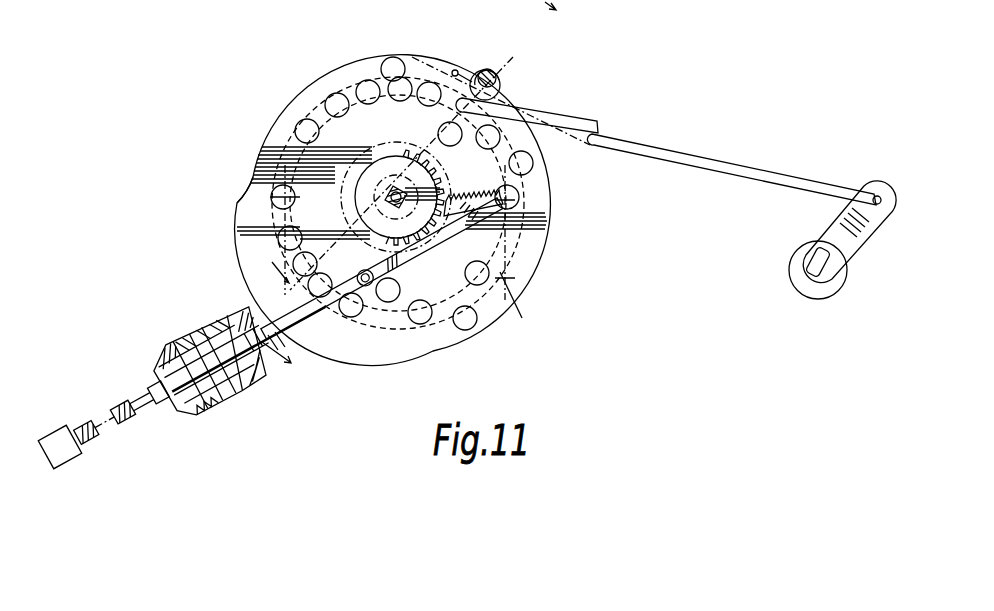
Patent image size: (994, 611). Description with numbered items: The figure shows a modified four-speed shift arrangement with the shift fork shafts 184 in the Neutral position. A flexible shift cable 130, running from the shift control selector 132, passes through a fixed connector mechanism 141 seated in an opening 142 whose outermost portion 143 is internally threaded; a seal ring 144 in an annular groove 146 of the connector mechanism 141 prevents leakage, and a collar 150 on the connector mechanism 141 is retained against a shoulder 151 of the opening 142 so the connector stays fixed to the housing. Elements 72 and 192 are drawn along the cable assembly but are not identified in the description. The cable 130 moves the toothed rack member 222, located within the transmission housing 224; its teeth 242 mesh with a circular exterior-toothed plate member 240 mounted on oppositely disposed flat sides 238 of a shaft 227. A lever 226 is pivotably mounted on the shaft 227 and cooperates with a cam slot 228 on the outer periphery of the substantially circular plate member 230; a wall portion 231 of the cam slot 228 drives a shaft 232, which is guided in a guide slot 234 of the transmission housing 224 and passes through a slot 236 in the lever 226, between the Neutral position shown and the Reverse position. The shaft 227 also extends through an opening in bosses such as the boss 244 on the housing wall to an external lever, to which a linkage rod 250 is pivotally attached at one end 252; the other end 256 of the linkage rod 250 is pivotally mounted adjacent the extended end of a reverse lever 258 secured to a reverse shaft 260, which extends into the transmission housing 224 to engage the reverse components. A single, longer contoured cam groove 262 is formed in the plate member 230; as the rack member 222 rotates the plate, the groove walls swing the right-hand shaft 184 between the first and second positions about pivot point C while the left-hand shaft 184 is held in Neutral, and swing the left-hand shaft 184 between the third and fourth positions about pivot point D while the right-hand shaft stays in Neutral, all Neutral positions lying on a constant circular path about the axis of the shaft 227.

The drive shaft 72 is at (281, 359).
The flexible shift cable 130 is at (86, 433).
The shift control selector 132 is at (60, 447).
The fixed connector mechanism 141 is at (214, 362).
The opening 142 is at (253, 340).
The internally threaded outermost portion 143 is at (205, 405).
The seal ring 144 is at (244, 348).
The annular groove 146 is at (219, 326).
The collar 150 is at (192, 340).
The shoulder 151 is at (168, 355).
The shift fork shafts 184 is at (252, 186).
The collar 192 is at (122, 412).
The toothed rack member 222 is at (298, 315).
The transmission housing 224 is at (840, 288).
The lever 226 is at (420, 162).
The shaft 227 is at (394, 186).
The cam slot 228 is at (510, 105).
The circular plate member 230 is at (552, 177).
The wall portion 231 is at (500, 85).
The shaft 232 is at (498, 76).
The guide slot 234 is at (455, 70).
The slot 236 is at (487, 68).
The flat sides 238 is at (452, 188).
The circular exterior-toothed plate member 240 is at (380, 174).
The teeth 242 is at (292, 255).
The boss 244 is at (378, 270).
The linkage rod 250 is at (632, 143).
The end of linkage rod 252 is at (437, 62).
The other end of linkage rod 256 is at (877, 195).
The reverse lever 258 is at (836, 222).
The reverse shaft 260 is at (812, 266).
The contoured cam slot or groove 262 is at (266, 146).